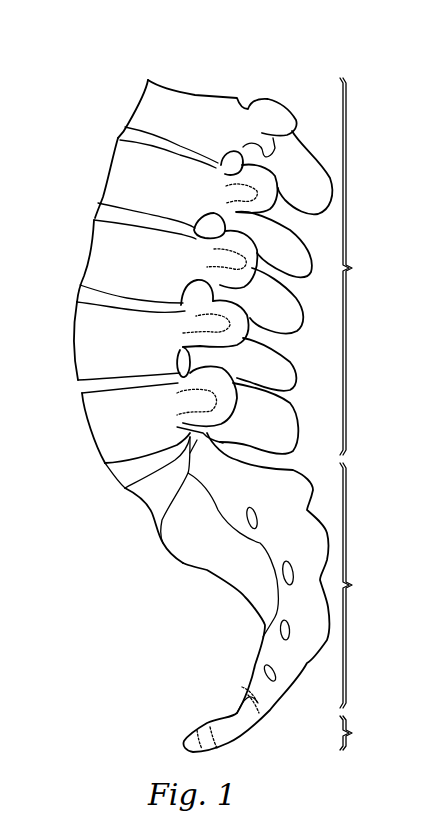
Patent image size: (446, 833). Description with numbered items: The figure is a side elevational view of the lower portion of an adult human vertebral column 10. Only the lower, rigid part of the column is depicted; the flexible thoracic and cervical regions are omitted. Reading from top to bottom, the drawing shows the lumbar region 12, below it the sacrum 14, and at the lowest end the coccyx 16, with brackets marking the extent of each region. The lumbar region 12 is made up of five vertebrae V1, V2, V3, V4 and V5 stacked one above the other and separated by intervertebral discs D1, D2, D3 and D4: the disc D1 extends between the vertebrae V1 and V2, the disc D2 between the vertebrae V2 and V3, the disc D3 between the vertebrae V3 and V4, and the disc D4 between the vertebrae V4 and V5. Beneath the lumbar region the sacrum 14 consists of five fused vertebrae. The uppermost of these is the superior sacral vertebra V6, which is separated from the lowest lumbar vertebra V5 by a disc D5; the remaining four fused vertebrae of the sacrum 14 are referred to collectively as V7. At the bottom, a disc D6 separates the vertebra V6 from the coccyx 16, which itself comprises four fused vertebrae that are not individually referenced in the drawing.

The vertebral column 10 is at (180, 379).
The lumbar region 12 is at (361, 266).
The sacrum 14 is at (361, 585).
The coccyx 16 is at (361, 733).
The vertebra V1 is at (225, 147).
The vertebra V2 is at (203, 207).
The vertebra V3 is at (190, 273).
The vertebra V4 is at (185, 335).
The vertebra V5 is at (190, 405).
The vertebra V6 is at (157, 500).
The fused vertebrae V7 is at (256, 592).
The intervertebral disc D1 is at (144, 136).
The intervertebral disc D2 is at (121, 210).
The intervertebral disc D3 is at (107, 284).
The intervertebral disc D4 is at (104, 395).
The disc D5 is at (127, 474).
The disc D6 is at (238, 681).